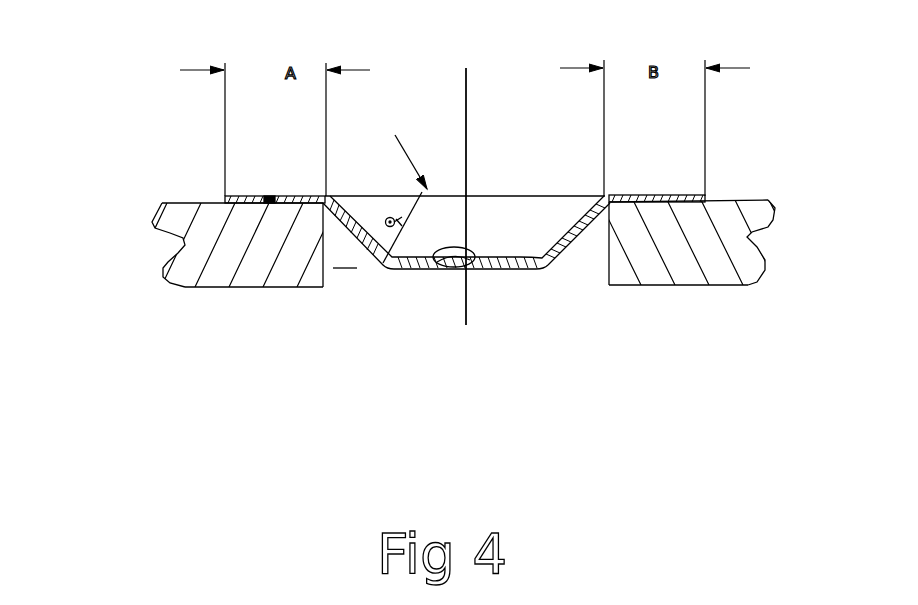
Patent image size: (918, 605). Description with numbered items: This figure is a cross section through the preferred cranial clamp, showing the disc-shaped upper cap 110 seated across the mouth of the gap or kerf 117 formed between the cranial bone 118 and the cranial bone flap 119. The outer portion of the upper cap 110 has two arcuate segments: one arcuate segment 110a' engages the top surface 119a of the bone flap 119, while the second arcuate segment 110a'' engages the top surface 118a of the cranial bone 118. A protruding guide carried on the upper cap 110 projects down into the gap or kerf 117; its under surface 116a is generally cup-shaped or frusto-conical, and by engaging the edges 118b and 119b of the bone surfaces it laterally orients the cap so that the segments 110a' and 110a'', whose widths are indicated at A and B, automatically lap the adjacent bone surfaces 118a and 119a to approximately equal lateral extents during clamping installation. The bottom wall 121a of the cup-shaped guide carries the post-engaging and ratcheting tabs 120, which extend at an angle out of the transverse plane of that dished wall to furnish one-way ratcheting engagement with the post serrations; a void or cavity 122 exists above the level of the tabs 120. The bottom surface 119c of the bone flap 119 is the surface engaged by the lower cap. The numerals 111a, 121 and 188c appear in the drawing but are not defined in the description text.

The upper cap 110 is at (543, 157).
The first arcuate segment 110a' is at (333, 145).
The second arcuate segment 110a'' is at (660, 168).
The conductive pad 111a is at (262, 197).
The guide under surface 116a is at (367, 252).
The gap or kerf 117 is at (579, 261).
The cranial bone 118 is at (648, 356).
The top surface of cranial bone 118a is at (717, 200).
The edge of cranial bone 118b is at (612, 207).
The bottom surface of right block 188c is at (718, 286).
The cranial bone flap 119 is at (248, 338).
The top surface of bone flap 119a is at (218, 203).
The edge of bone flap 119b is at (321, 206).
The bottom surface of bone flap 119c is at (237, 288).
The post-engaging and ratcheting tabs 120 is at (484, 246).
The inclined wall of recess 121 is at (546, 268).
The bottom wall of cup-shaped guide 121a is at (418, 270).
The void or cavity 122 is at (519, 214).